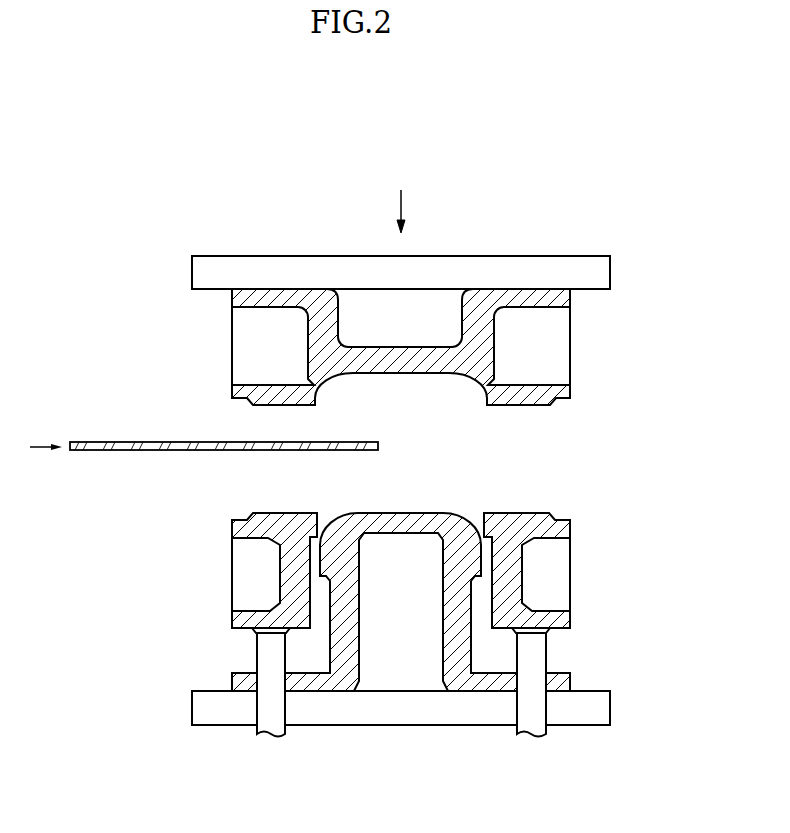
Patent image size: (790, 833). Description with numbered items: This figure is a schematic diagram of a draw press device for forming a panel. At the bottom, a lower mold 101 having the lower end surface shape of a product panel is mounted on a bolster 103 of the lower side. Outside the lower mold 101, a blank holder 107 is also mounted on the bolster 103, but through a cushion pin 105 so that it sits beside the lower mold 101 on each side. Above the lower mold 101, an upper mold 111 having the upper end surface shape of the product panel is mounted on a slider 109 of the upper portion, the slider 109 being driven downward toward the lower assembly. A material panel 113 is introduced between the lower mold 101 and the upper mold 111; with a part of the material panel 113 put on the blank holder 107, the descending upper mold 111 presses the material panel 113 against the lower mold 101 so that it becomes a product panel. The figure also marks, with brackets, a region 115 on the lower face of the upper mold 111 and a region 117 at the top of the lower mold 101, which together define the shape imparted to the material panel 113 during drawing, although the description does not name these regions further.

The lower mold 101 is at (340, 597).
The bolster 103 is at (203, 705).
The cushion pin 105 is at (536, 713).
The blank holder 107 is at (233, 528).
The slider 109 is at (202, 270).
The upper mold 111 is at (242, 333).
The material panel 113 is at (102, 442).
The forming portion 115 is at (517, 408).
The forming groove 117 is at (518, 512).